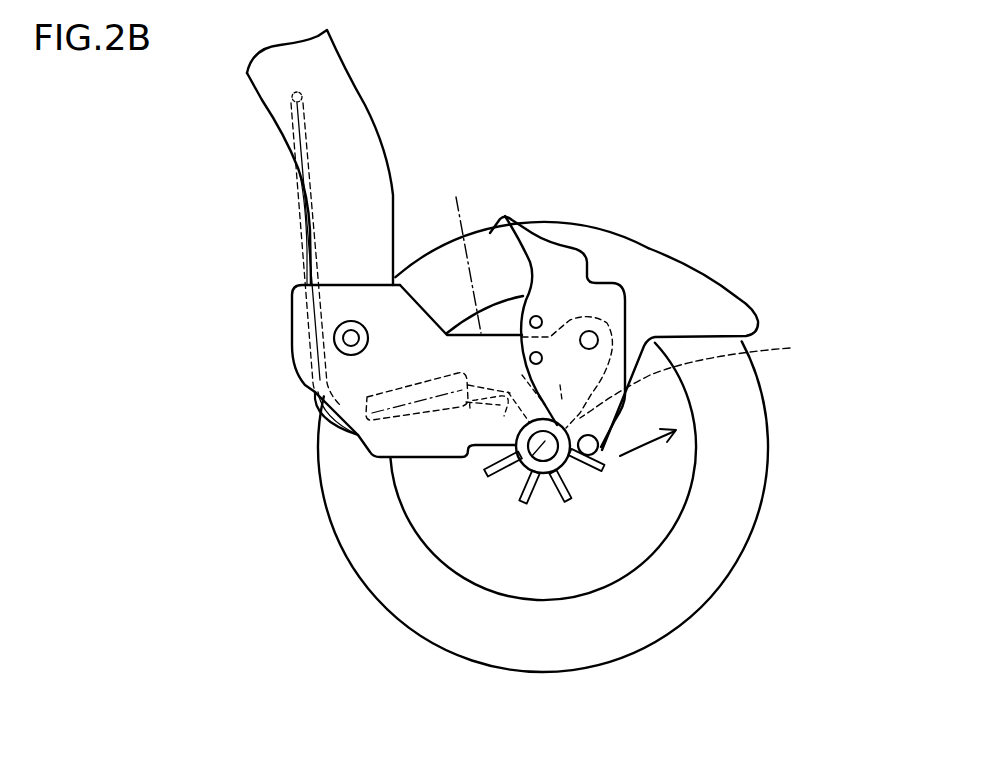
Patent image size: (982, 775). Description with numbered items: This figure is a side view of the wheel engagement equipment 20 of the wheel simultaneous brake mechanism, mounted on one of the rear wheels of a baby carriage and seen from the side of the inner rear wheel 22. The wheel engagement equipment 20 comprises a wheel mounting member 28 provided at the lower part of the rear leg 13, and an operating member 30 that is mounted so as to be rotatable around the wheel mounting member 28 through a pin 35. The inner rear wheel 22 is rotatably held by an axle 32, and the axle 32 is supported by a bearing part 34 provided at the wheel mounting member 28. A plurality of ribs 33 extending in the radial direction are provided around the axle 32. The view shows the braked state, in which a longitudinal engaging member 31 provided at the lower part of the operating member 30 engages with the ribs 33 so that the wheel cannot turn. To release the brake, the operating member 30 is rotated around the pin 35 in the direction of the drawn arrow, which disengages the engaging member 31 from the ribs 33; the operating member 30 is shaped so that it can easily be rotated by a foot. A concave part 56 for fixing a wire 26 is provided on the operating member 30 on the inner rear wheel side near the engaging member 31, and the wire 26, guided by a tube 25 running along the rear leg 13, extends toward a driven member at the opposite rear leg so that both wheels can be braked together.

The rear leg 13 is at (355, 132).
The wheel engagement equipment 20 is at (564, 196).
The inner rear wheel 22 is at (742, 499).
The tube 25 is at (296, 132).
The wire 26 is at (462, 253).
The wheel mounting member 28 is at (353, 378).
The operating member 30 is at (745, 317).
The engaging member 31 is at (598, 438).
The axle 32 is at (516, 480).
The ribs 33 is at (572, 491).
The bearing part 34 is at (543, 474).
The pin 35 is at (591, 332).
The concave part 56 is at (703, 379).